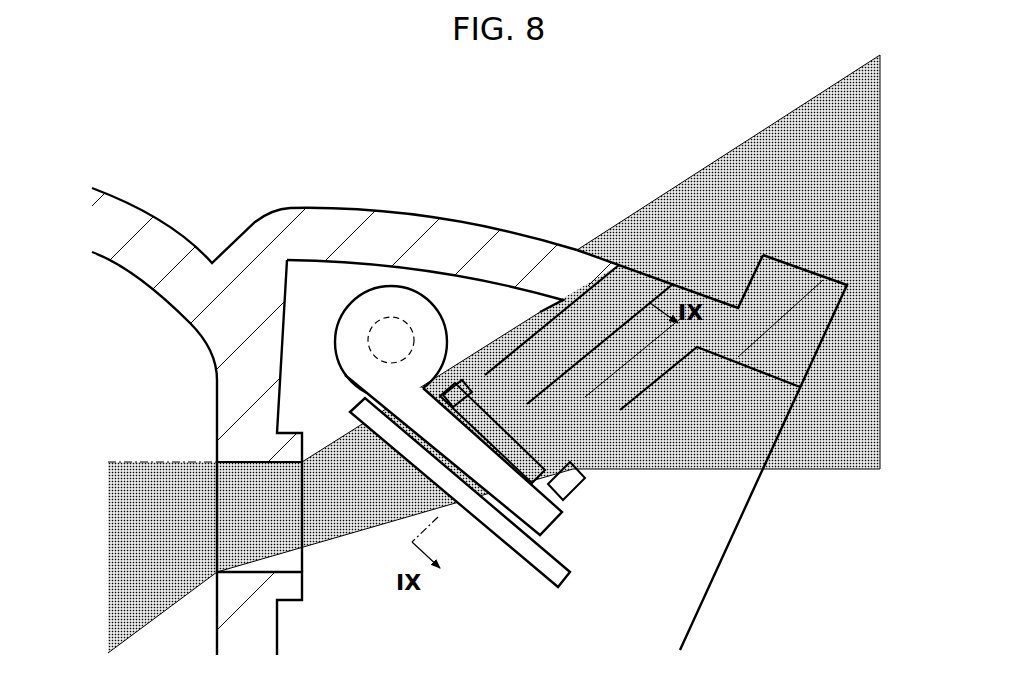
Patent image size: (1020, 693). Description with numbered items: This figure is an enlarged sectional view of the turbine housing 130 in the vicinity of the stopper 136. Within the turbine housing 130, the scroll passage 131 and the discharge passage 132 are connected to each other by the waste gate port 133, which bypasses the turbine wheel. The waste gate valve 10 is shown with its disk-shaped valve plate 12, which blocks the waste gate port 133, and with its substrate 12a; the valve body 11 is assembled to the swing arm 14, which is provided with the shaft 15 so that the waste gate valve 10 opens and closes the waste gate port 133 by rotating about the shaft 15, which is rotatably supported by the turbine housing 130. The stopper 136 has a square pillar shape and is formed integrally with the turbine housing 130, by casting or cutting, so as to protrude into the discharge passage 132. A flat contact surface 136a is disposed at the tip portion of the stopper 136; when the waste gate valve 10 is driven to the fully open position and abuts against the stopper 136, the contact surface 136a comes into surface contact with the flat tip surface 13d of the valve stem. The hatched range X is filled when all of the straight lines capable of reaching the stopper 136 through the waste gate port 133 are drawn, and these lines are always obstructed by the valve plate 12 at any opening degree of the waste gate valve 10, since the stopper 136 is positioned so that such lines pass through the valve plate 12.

The waste gate valve 10 is at (630, 556).
The valve body 11 is at (486, 588).
The valve plate 12 is at (566, 580).
The substrate 12a is at (520, 562).
The tip surface 13d is at (540, 436).
The swing arm 14 is at (368, 383).
The shaft 15 is at (367, 342).
The turbine housing 130 is at (400, 226).
The scroll passage 131 is at (188, 334).
The discharge passage 132 is at (767, 373).
The waste gate port 133 is at (300, 562).
The stopper 136 is at (687, 363).
The contact surface 136a is at (470, 385).
The range X is at (703, 185).